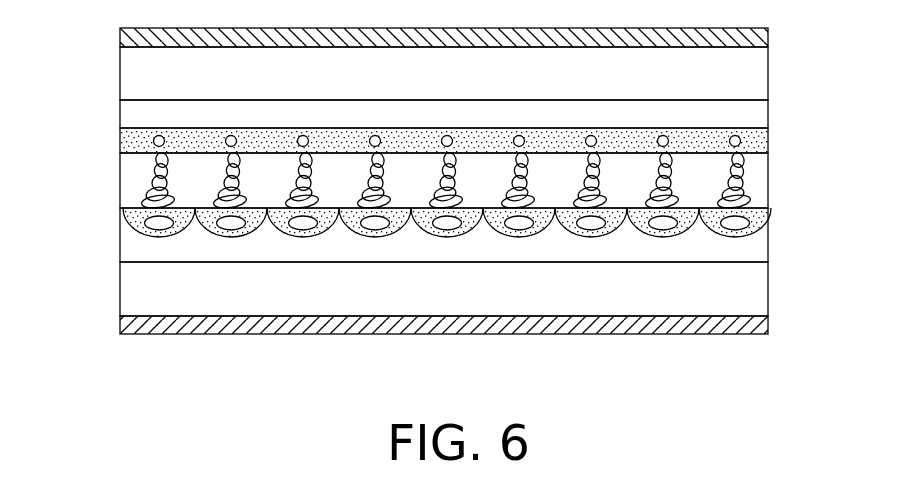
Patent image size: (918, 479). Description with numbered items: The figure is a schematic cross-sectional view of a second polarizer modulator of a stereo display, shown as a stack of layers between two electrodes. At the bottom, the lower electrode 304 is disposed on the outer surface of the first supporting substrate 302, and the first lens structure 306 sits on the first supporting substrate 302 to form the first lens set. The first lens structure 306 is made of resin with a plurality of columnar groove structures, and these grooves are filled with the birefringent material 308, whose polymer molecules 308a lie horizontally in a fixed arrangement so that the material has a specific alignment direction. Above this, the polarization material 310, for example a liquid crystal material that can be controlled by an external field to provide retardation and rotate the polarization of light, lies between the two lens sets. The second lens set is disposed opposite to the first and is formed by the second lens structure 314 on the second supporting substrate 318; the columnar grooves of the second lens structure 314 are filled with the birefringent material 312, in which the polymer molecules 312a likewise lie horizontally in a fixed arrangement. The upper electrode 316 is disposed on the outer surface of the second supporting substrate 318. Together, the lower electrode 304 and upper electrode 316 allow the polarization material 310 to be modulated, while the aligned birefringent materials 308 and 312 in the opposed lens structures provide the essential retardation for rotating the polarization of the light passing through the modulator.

The first supporting substrate 302 is at (762, 294).
The lower electrode 304 is at (762, 329).
The first lens structure 306 is at (762, 247).
The birefringent material 308 is at (762, 218).
The polymer molecules 308a is at (132, 223).
The polarization material 310 is at (762, 184).
The birefringent material 312 is at (762, 145).
The polymer molecules 312a is at (153, 140).
The second lens structure 314 is at (762, 117).
The upper electrode 316 is at (762, 35).
The second supporting substrate 318 is at (762, 74).